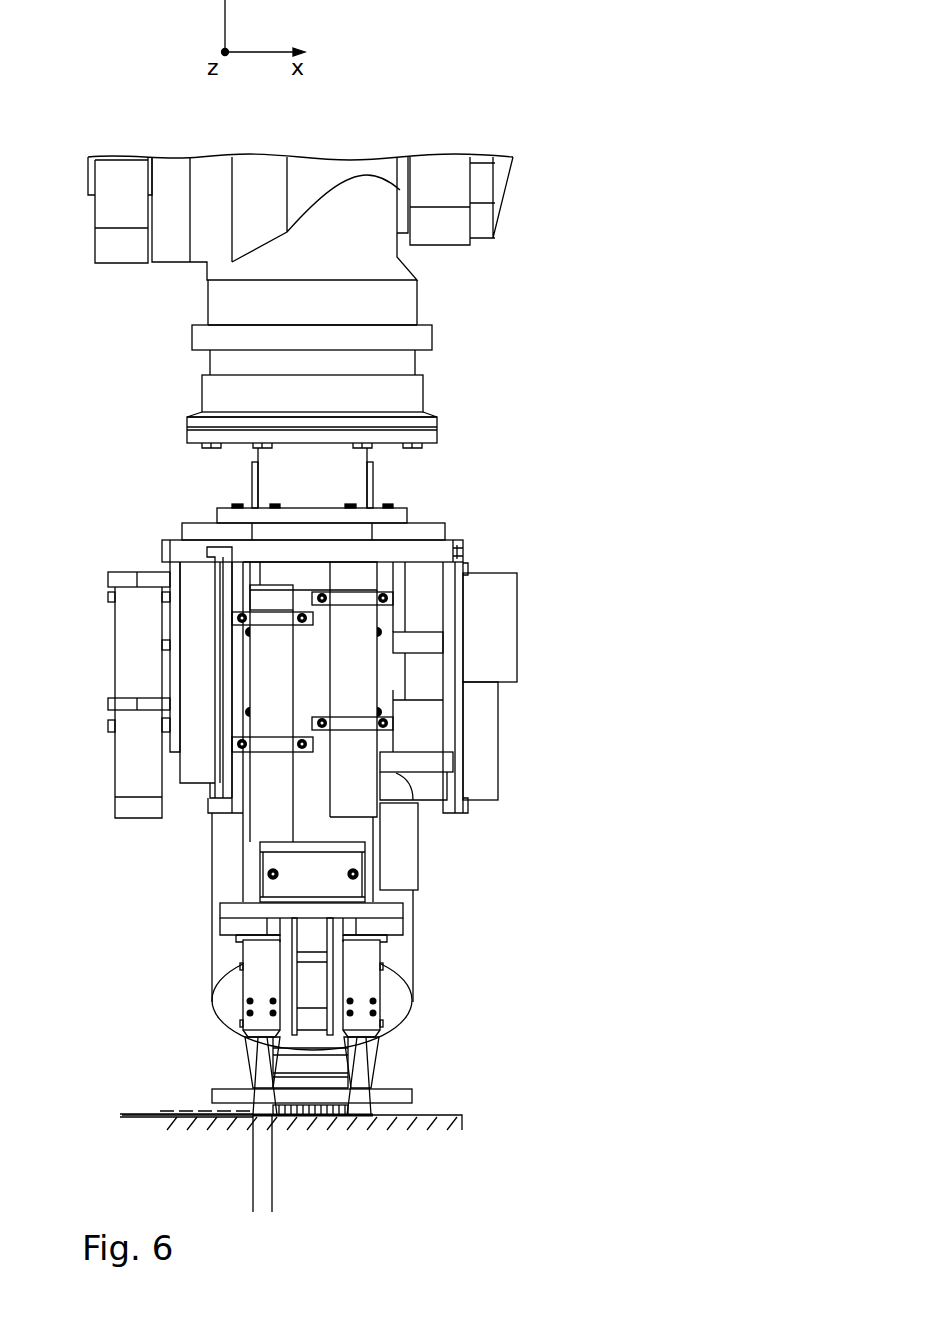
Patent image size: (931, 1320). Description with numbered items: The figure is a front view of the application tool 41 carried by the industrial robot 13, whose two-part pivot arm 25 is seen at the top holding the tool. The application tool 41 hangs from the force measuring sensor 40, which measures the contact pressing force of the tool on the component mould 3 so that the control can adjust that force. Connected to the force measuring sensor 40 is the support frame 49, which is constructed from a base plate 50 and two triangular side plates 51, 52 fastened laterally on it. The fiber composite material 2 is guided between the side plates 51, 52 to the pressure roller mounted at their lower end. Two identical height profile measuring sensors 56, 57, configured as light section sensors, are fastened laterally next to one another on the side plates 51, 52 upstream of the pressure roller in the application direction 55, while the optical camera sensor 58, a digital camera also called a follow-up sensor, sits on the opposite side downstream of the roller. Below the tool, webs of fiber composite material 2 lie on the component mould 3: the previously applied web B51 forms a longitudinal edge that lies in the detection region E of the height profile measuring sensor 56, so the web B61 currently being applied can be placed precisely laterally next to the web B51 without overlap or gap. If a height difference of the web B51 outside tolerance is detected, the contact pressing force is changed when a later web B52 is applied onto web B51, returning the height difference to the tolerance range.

The industrial robot 13 is at (519, 204).
The pivot arm 25 is at (422, 306).
The force measuring sensor 40 is at (398, 518).
The base plate 50 is at (442, 553).
The application tool 41 is at (533, 615).
The support frame 49 is at (504, 750).
The side plate 51 is at (252, 873).
The side plate 52 is at (373, 855).
The application direction 55 is at (478, 905).
The height profile measuring sensor 56 is at (242, 967).
The height profile measuring sensor 57 is at (370, 983).
The optical camera sensor 58 is at (403, 967).
The fiber composite material 2 is at (315, 1118).
The component mould 3 is at (430, 1128).
The web B51 is at (183, 1120).
The web B52 is at (173, 1108).
The web B61 is at (343, 1121).
The detection region E is at (225, 1208).